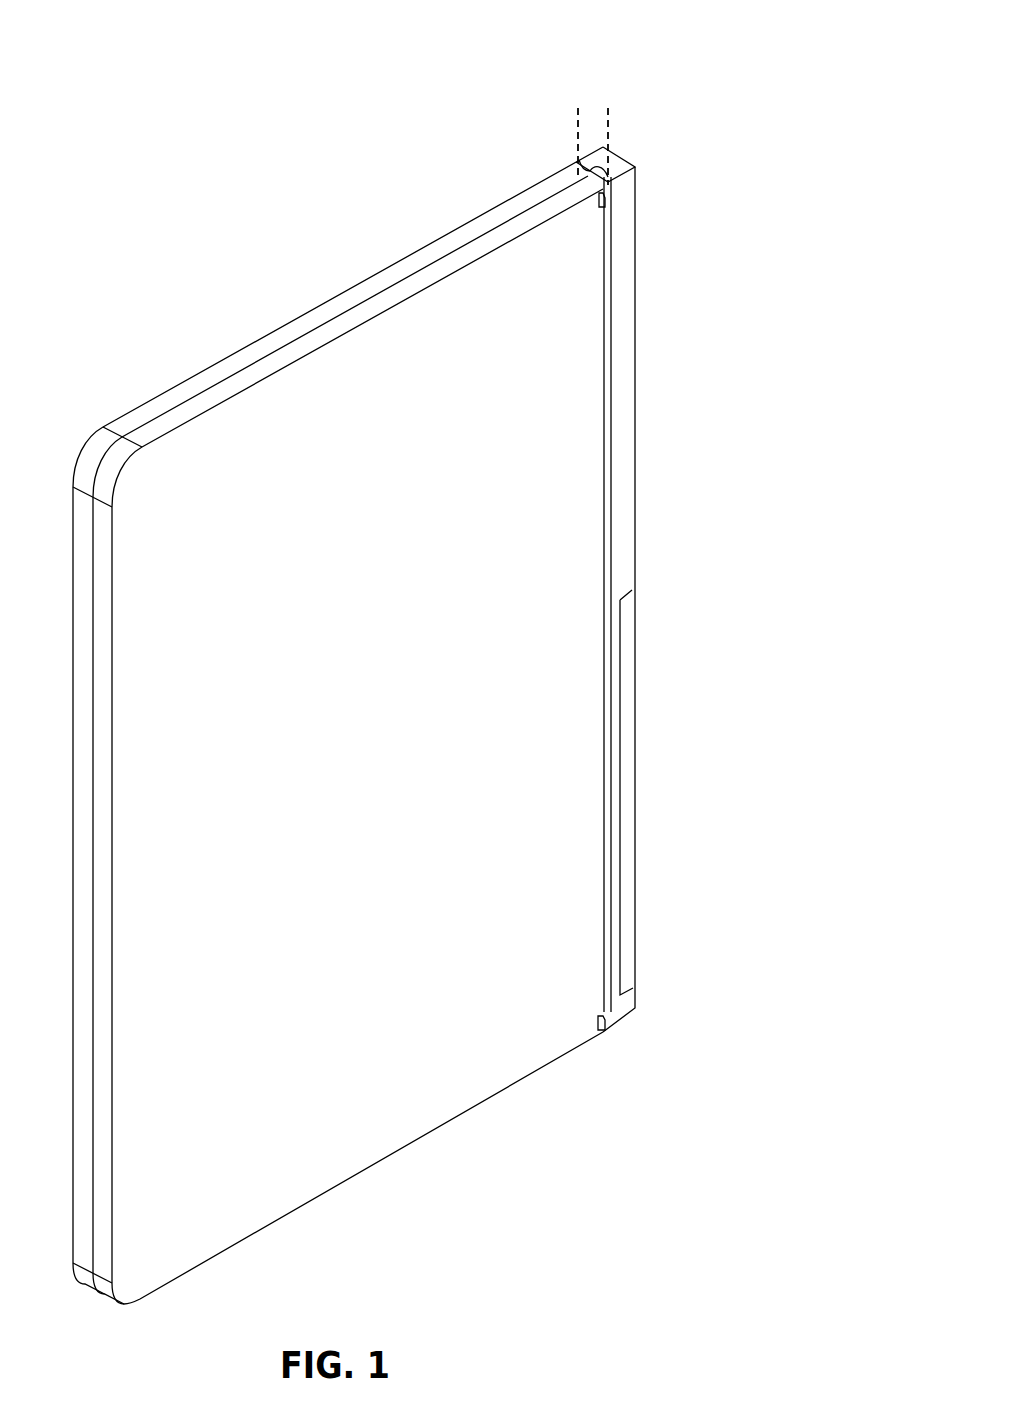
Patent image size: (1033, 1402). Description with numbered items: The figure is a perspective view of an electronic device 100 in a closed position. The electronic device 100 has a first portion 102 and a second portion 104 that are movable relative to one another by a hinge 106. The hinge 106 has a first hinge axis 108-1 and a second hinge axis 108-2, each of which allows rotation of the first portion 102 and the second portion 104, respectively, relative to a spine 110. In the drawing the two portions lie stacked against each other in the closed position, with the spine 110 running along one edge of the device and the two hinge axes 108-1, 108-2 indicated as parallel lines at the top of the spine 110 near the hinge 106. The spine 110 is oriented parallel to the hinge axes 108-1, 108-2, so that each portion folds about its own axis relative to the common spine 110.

The electronic device 100 is at (648, 62).
The first portion 102 is at (585, 483).
The second portion 104 is at (127, 418).
The hinge 106 is at (548, 171).
The first hinge axis 108-1 is at (608, 134).
The second hinge axis 108-2 is at (578, 128).
The spine 110 is at (640, 340).